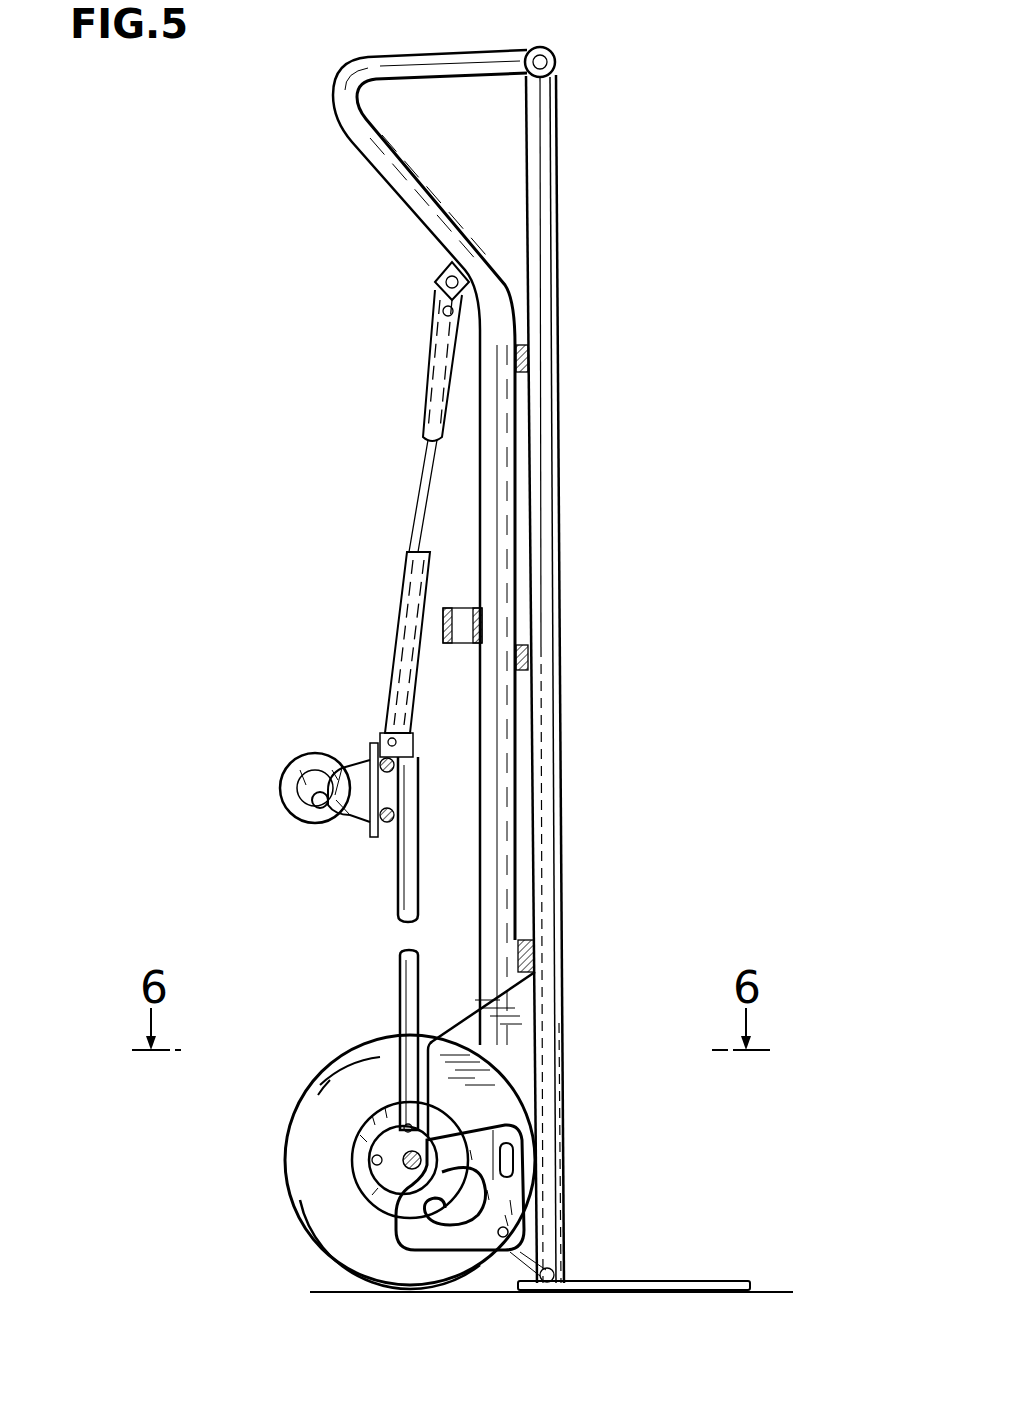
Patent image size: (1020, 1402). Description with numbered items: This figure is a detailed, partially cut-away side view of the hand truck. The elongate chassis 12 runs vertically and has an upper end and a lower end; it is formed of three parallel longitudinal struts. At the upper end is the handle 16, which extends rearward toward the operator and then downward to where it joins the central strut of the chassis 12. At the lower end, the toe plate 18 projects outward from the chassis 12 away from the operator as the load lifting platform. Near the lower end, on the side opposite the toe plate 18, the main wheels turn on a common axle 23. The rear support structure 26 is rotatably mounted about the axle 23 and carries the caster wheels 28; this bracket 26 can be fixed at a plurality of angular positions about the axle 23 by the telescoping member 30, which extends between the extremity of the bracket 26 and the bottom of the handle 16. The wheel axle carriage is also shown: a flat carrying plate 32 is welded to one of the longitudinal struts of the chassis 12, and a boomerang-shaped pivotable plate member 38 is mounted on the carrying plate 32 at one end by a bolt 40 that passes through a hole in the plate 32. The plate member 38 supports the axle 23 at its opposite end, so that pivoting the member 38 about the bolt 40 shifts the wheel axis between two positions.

The chassis 12 is at (562, 226).
The handle 16 is at (420, 68).
The toe plate 18 is at (677, 1294).
The axle 23 is at (366, 1140).
The rear support structure 26 is at (398, 880).
The caster wheels 28 is at (303, 765).
The telescoping member 30 is at (412, 549).
The carrying plate 32 is at (472, 1013).
The pivotable plate member 38 is at (500, 1128).
The bolt 40 is at (509, 1233).